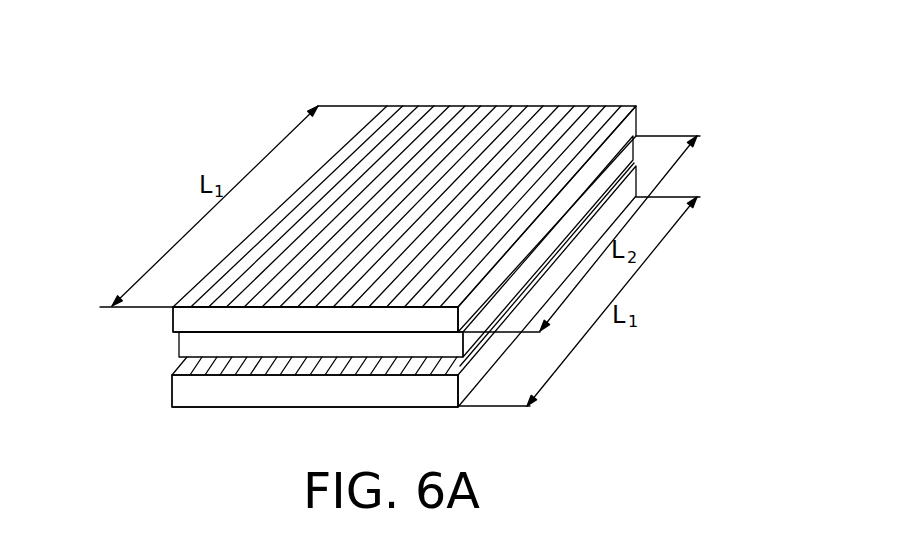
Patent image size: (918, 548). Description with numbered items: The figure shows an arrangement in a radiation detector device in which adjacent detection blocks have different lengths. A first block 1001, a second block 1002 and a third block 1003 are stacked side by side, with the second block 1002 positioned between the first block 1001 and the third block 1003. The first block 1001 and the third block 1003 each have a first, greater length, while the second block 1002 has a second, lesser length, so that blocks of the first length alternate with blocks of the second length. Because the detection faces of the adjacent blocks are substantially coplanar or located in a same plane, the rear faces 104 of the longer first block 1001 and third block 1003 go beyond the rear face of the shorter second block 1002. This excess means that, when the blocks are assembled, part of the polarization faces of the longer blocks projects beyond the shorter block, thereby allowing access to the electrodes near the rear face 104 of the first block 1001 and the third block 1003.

The third detection block 1003 is at (583, 100).
The second detection block 1002 is at (642, 147).
The first detection block 1001 is at (297, 390).
The rear face 104 is at (185, 316).